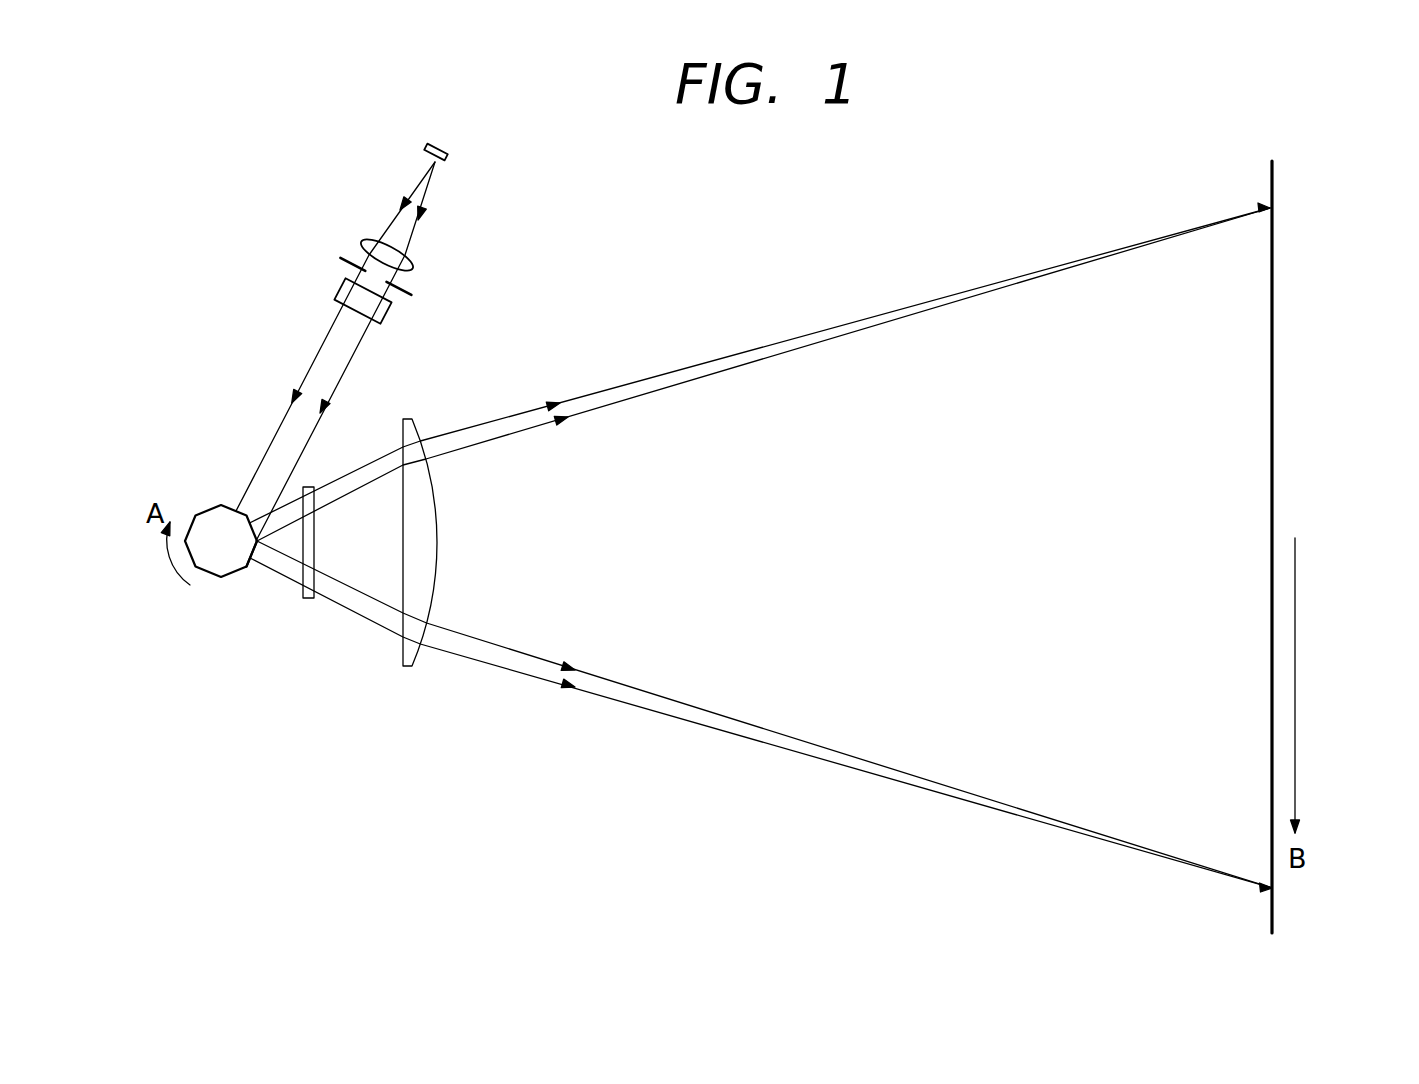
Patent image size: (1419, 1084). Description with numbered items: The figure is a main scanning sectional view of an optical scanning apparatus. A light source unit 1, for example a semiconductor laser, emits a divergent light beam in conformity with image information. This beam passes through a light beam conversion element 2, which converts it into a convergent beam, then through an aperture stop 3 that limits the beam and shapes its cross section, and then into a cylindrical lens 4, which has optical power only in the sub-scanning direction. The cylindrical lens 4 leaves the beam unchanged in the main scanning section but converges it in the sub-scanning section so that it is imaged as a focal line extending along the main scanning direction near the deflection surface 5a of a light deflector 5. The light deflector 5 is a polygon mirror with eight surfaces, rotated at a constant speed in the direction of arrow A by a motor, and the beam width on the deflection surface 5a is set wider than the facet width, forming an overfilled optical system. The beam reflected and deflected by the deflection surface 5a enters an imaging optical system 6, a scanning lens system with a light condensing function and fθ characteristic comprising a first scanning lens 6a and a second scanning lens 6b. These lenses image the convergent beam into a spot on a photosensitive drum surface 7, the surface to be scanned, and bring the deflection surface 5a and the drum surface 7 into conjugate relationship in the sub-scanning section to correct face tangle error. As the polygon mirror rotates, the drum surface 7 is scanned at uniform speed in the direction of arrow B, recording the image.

The light source unit 1 is at (457, 147).
The light beam conversion element 2 is at (420, 260).
The aperture stop 3 is at (420, 297).
The cylindrical lens 4 is at (392, 323).
The light deflector 5 is at (207, 500).
The deflection surface 5a is at (253, 558).
The imaging optical system 6 is at (390, 551).
The first scanning lens 6a is at (312, 487).
The second scanning lens 6b is at (412, 420).
The photosensitive drum surface 7 is at (1280, 907).